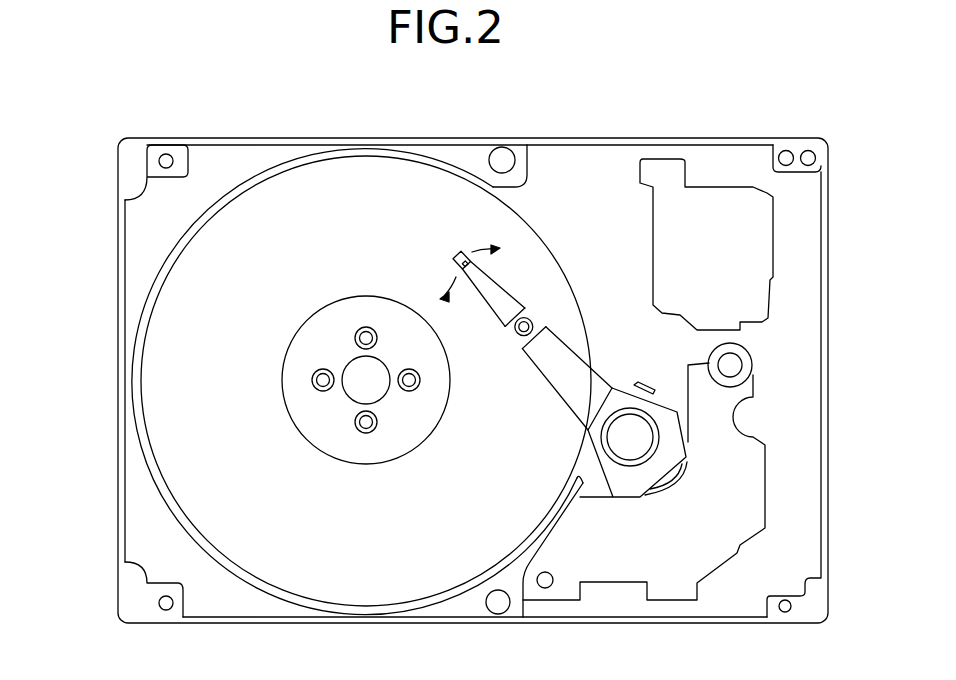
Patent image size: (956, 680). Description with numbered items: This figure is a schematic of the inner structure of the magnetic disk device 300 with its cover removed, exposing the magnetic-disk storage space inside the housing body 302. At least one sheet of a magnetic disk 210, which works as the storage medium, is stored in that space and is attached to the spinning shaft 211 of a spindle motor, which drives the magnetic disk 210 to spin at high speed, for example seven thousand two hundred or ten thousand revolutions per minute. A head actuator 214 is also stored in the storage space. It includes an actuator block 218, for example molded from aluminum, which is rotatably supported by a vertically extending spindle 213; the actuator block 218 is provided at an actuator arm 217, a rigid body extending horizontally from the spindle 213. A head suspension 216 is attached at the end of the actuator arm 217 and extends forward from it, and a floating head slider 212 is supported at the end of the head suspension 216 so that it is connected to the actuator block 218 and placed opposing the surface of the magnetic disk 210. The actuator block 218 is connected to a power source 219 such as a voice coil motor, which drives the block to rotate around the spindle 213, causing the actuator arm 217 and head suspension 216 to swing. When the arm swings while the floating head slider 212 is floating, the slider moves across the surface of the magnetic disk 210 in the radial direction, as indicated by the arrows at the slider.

The magnetic disk device 300 is at (305, 131).
The housing body 302 is at (118, 226).
The magnetic disk 210 is at (157, 288).
The spinning shaft 211 is at (348, 360).
The floating head slider 212 is at (452, 257).
The spindle 213 is at (653, 453).
The head actuator 214 is at (560, 334).
The head suspension 216 is at (490, 300).
The actuator arm 217 is at (532, 363).
The actuator block 218 is at (578, 452).
The power source 219 is at (710, 578).